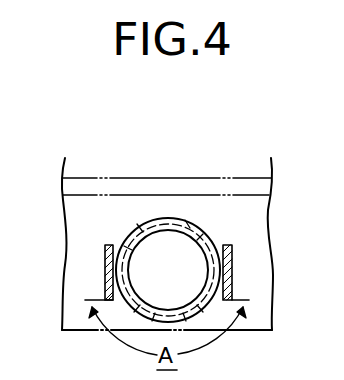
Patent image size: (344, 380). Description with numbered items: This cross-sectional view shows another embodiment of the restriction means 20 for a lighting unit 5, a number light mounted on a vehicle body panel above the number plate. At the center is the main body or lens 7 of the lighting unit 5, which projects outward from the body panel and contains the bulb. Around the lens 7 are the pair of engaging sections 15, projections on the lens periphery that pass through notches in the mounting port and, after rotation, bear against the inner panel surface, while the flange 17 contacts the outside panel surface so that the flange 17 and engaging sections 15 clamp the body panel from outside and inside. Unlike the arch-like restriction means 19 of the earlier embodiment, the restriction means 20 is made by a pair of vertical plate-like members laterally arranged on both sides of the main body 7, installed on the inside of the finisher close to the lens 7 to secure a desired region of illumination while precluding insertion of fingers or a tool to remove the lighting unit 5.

The lighting unit 5 is at (192, 263).
The main body or lens 7 is at (143, 257).
The engaging sections 15 is at (195, 220).
The flange 17 is at (153, 220).
The restriction means 19 is at (105, 274).
The restriction means 20 is at (232, 263).